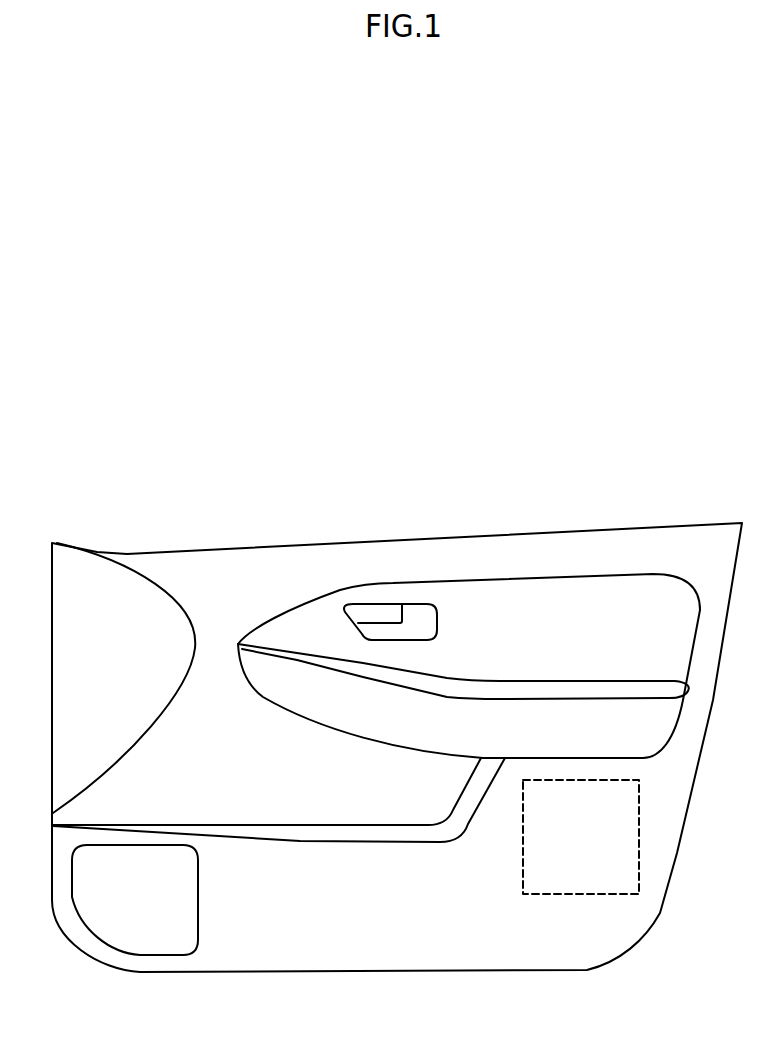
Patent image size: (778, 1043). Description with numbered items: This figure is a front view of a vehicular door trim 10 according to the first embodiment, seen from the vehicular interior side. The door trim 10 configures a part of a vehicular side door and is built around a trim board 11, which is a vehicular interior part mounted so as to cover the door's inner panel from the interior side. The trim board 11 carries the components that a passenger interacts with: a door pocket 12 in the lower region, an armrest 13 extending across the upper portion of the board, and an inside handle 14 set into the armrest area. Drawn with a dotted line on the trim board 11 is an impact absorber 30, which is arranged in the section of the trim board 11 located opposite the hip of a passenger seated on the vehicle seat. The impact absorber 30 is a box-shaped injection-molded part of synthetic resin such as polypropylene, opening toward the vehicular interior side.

The vehicular door trim 10 is at (92, 506).
The trim board 11 is at (448, 927).
The door pocket 12 is at (310, 832).
The armrest 13 is at (558, 718).
The inside handle 14 is at (417, 617).
The impact absorber 30 is at (578, 863).